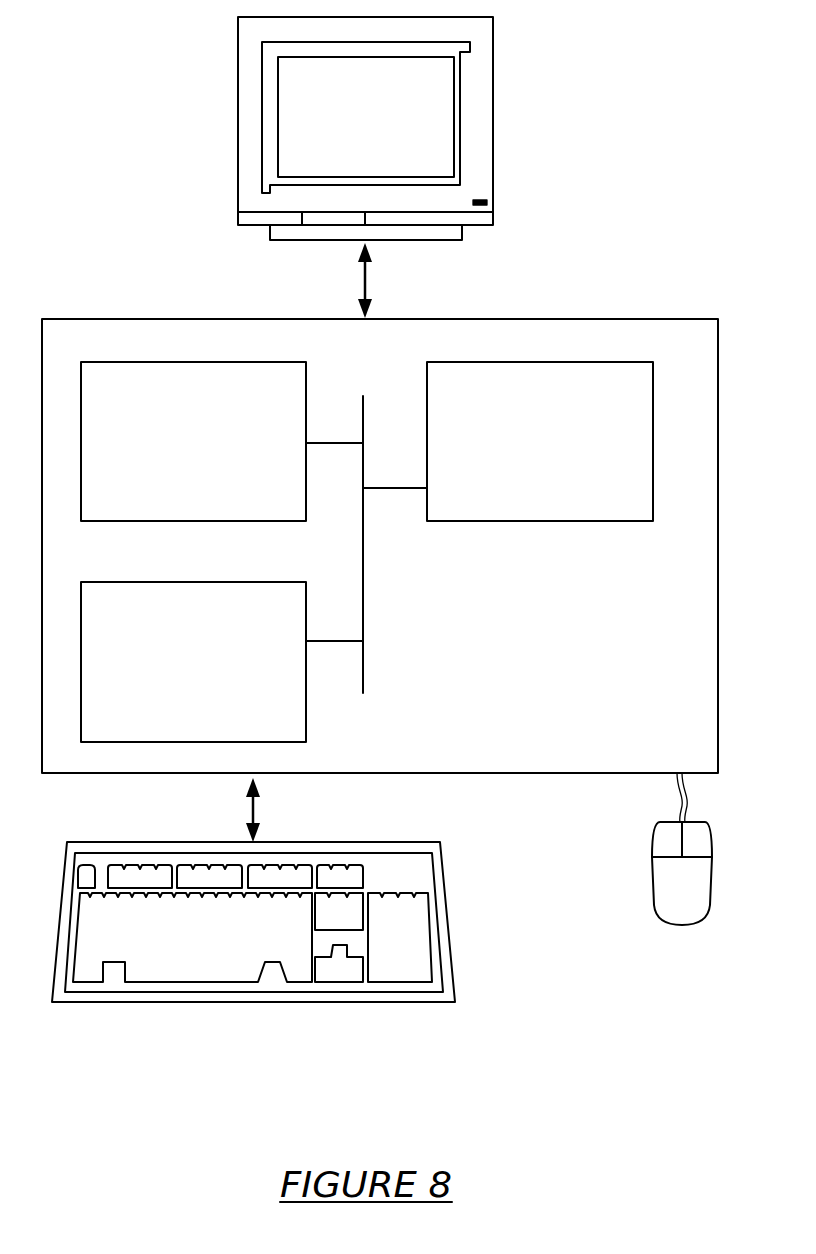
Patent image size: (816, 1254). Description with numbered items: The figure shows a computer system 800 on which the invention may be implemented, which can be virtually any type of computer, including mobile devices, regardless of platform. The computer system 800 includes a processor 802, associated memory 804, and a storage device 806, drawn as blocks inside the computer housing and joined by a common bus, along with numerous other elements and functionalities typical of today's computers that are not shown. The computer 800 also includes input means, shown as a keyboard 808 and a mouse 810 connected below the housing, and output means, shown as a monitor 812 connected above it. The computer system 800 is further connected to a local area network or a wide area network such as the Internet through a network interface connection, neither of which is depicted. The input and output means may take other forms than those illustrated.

The computer system 800 is at (624, 172).
The processor 802 is at (536, 451).
The memory 804 is at (172, 451).
The storage device 806 is at (172, 671).
The keyboard 808 is at (165, 959).
The mouse 810 is at (661, 896).
The monitor 812 is at (344, 134).